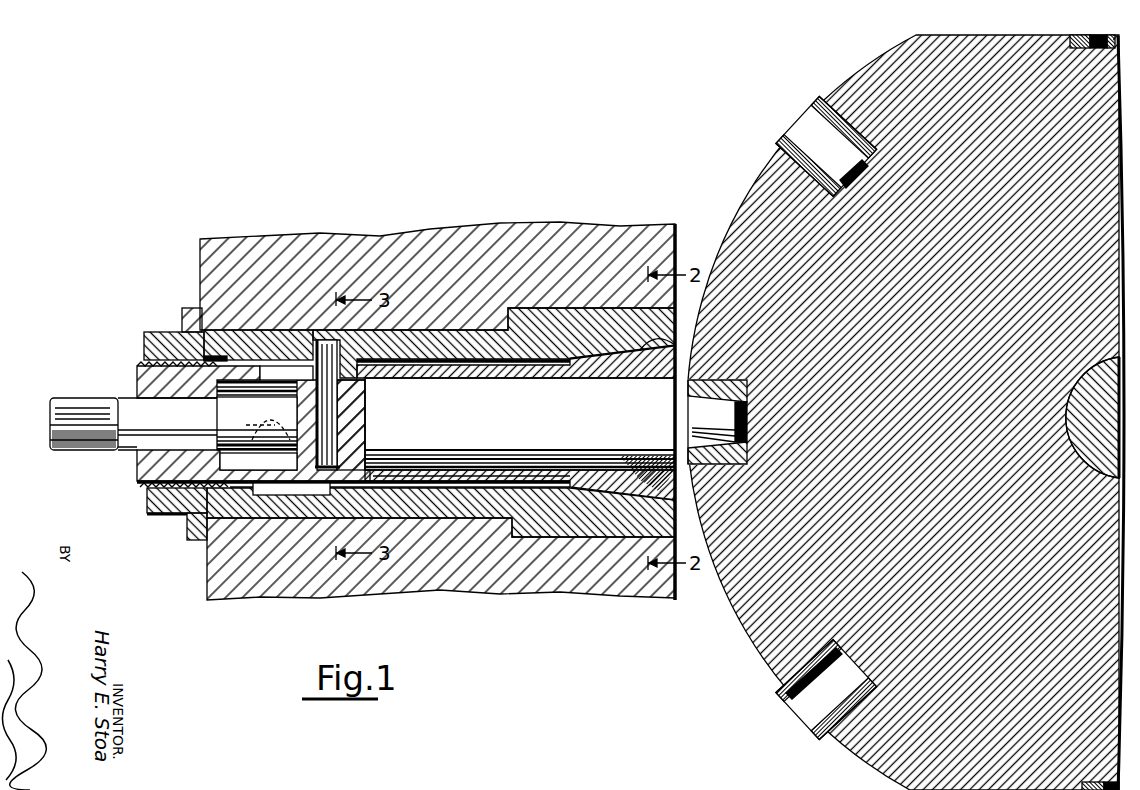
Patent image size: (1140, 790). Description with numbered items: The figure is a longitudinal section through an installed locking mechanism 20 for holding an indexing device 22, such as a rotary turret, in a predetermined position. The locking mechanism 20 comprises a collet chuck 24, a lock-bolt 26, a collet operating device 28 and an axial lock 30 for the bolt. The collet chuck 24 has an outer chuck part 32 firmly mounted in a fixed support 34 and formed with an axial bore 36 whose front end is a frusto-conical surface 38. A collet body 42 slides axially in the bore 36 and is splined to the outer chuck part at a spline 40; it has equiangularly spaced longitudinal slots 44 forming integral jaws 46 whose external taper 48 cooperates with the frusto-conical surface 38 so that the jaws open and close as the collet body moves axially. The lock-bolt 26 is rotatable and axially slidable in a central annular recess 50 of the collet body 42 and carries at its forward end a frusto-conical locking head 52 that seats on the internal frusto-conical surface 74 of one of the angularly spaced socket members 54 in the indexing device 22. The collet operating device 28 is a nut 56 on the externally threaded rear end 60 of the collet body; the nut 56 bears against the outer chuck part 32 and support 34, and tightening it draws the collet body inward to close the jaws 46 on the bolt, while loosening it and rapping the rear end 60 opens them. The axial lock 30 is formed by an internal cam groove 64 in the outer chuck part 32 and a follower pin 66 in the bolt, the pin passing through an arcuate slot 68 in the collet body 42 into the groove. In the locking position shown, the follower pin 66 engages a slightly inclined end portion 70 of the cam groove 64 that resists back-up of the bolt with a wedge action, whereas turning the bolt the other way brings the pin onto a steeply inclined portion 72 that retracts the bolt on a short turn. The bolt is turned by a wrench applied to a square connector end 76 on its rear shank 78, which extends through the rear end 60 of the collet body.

The locking mechanism 20 is at (113, 461).
The indexing device 22 is at (752, 192).
The collet chuck 24 is at (465, 338).
The lock-bolt 26 is at (538, 425).
The collet operating device 28 is at (168, 520).
The axial lock 30 is at (277, 392).
The outer chuck part 32 is at (243, 338).
The fixed support 34 is at (390, 238).
The axial bore 36 is at (440, 474).
The frusto-conical surface 38 is at (676, 312).
The spline 40 is at (230, 475).
The collet body 42 is at (470, 367).
The longitudinal slots 44 is at (490, 473).
The jaws 46 is at (625, 372).
The external taper 48 is at (648, 347).
The central annular recess 50 is at (267, 463).
The locking head 52 is at (716, 420).
The socket members 54 is at (810, 140).
The nut 56 is at (181, 338).
The threaded rear end 60 is at (150, 380).
The cam groove 64 is at (340, 352).
The follower pin 66 is at (362, 424).
The arcuate slot 68 is at (178, 421).
The end portion of cam groove 70 is at (318, 382).
The steep portion of cam groove 72 is at (255, 427).
The internal frusto-conical surface 74 is at (750, 445).
The connector end 76 is at (55, 410).
The rear shank 78 is at (168, 423).